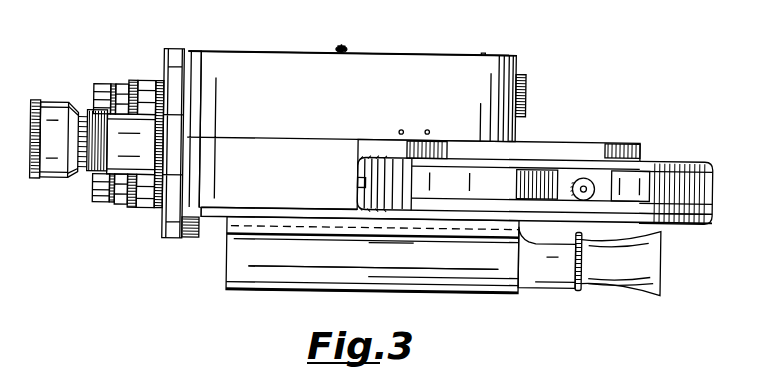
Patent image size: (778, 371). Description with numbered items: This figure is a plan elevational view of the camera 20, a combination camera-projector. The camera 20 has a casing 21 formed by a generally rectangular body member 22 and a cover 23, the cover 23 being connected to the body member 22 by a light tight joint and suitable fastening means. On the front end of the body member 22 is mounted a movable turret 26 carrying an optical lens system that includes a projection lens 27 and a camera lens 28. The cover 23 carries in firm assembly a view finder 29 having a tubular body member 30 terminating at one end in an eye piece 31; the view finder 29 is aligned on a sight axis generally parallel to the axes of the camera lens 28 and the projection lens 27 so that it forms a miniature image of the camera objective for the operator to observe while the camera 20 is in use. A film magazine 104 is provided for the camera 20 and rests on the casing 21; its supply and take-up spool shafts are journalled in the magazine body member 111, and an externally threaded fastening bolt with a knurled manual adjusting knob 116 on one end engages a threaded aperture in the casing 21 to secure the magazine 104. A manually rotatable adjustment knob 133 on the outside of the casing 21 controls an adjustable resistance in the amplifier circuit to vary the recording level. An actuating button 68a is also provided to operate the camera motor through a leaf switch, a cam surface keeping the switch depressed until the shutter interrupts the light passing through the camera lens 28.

The camera 20 is at (220, 285).
The casing 21 is at (367, 54).
The body member 22 is at (258, 64).
The cover 23 is at (218, 221).
The movable turret 26 is at (167, 240).
The projection lens 27 is at (83, 177).
The camera lens 28 is at (118, 211).
The view finder 29 is at (465, 297).
The tubular body member 30 is at (415, 268).
The eye piece 31 is at (607, 278).
The actuating button 68a is at (348, 35).
The film magazine 104 is at (658, 152).
The magazine body member 111 is at (542, 163).
The knurled manual adjusting knob 116 is at (583, 176).
The manually rotatable adjustment knob 133 is at (525, 90).